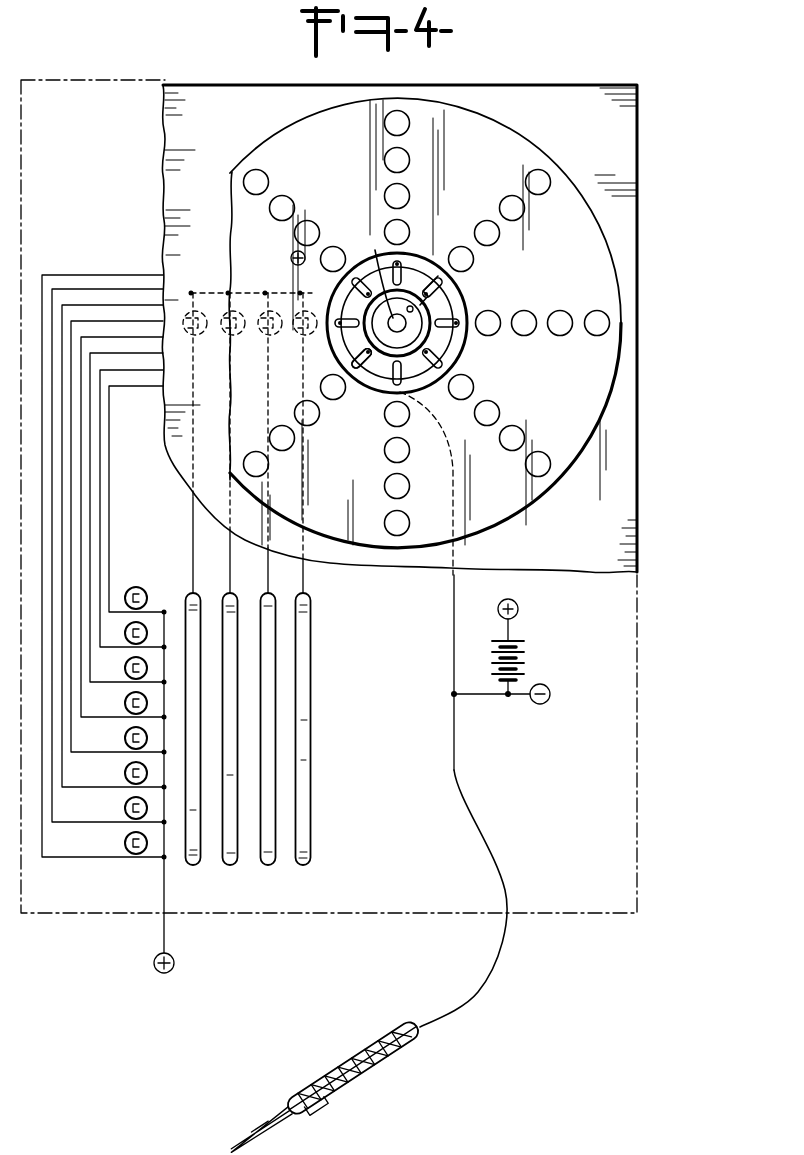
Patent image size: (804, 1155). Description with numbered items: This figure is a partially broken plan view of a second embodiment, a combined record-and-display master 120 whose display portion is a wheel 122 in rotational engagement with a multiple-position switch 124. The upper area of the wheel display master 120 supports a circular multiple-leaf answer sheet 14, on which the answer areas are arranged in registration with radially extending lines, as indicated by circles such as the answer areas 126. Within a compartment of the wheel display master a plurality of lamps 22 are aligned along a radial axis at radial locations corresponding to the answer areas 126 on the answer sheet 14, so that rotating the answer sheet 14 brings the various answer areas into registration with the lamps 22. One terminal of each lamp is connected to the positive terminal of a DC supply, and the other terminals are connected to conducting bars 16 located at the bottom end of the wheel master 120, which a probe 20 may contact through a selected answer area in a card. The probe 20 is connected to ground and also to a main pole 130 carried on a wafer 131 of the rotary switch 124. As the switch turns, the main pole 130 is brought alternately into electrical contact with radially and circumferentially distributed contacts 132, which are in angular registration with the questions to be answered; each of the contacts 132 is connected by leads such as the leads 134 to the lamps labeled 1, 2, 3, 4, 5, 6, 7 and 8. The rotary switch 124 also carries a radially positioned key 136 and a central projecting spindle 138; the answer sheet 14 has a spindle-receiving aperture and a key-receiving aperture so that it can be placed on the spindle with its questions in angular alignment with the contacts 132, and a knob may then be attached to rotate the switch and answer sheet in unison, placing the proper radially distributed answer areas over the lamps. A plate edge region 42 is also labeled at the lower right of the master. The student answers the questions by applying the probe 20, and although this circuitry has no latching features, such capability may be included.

The lamp 1 is at (148, 595).
The lamp 2 is at (146, 632).
The lamp 3 is at (146, 668).
The lamp 4 is at (146, 705).
The lamp 5 is at (146, 738).
The lamp 6 is at (146, 773).
The lamp 7 is at (146, 808).
The lamp 8 is at (146, 843).
The circular multiple-leaf answer sheet 14 is at (513, 505).
The conducting bars 16 is at (291, 882).
The probe 20 is at (347, 1060).
The lamps 22 is at (228, 292).
The plate edge 42 is at (616, 540).
The combined record-and-display master 120 is at (638, 400).
The wheel 122 is at (585, 448).
The multiple-position switch 124 is at (452, 348).
The answer areas 126 is at (498, 323).
The main pole 130 is at (396, 386).
The wafer 131 is at (356, 366).
The contacts 132 is at (452, 335).
The leads 134 is at (106, 275).
The key 136 is at (412, 306).
The spindle 138 is at (368, 270).